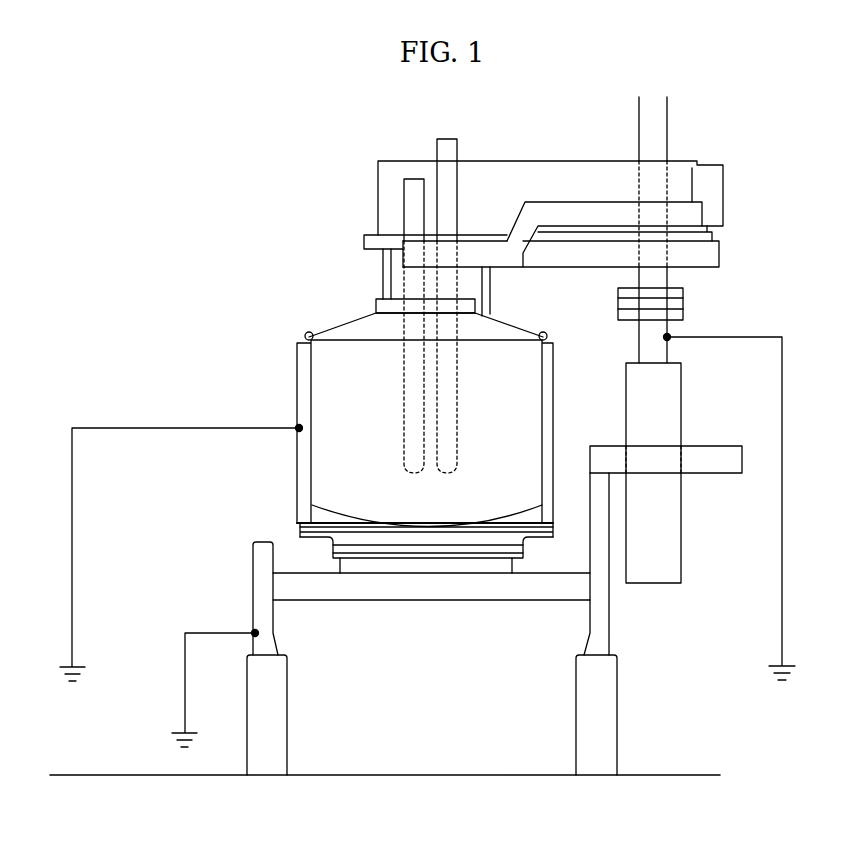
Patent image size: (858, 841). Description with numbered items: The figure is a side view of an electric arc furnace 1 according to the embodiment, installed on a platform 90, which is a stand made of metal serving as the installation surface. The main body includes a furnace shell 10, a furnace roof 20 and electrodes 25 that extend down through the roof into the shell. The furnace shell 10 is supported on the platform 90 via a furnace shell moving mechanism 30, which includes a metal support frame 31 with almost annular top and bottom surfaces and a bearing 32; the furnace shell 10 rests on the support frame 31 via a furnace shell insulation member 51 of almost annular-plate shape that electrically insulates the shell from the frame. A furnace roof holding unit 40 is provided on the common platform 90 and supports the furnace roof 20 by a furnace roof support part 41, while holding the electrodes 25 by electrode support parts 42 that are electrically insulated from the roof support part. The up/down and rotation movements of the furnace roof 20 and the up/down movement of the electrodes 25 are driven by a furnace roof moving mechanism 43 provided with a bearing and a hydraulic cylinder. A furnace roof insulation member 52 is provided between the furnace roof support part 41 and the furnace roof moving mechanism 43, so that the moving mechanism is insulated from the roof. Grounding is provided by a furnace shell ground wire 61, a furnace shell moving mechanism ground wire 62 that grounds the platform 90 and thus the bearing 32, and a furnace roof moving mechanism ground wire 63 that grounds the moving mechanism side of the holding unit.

The electric arc furnace 1 is at (191, 186).
The furnace shell 10 is at (512, 378).
The furnace roof 20 is at (370, 322).
The electrodes 25 is at (415, 178).
The furnace shell moving mechanism 30 is at (322, 548).
The support frame 31 is at (303, 531).
The bearing 32 is at (352, 567).
The furnace roof holding unit 40 is at (601, 174).
The furnace roof support part 41 is at (598, 173).
The electrode support parts 42 is at (703, 254).
The furnace roof moving mechanism 43 is at (667, 411).
The furnace shell insulation member 51 is at (298, 520).
The furnace roof insulation member 52 is at (676, 304).
The furnace shell ground wire 61 is at (170, 553).
The furnace shell moving mechanism ground wire 62 is at (205, 689).
The furnace roof moving mechanism ground wire 63 is at (739, 507).
The platform 90 is at (532, 588).